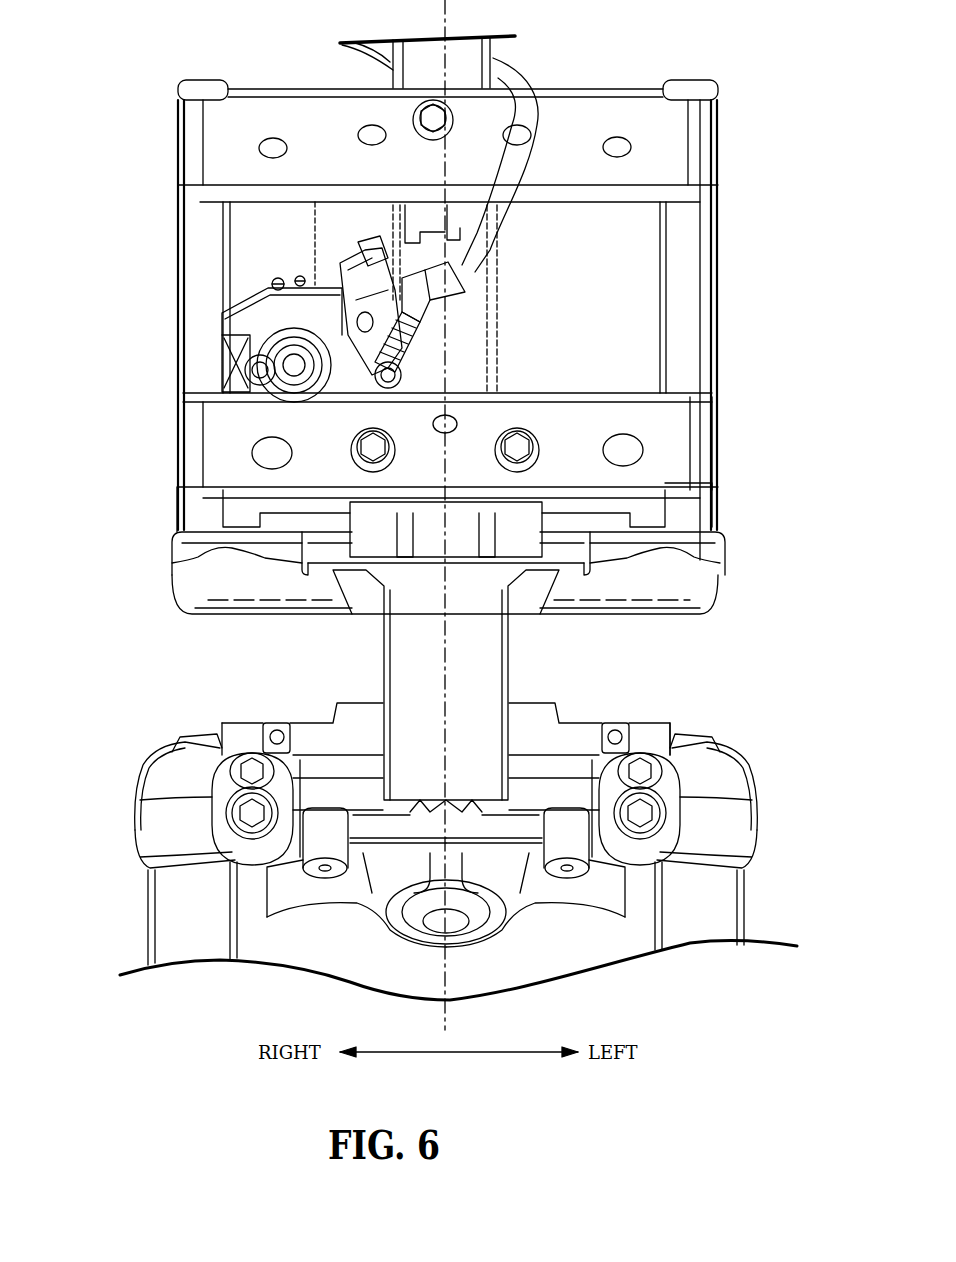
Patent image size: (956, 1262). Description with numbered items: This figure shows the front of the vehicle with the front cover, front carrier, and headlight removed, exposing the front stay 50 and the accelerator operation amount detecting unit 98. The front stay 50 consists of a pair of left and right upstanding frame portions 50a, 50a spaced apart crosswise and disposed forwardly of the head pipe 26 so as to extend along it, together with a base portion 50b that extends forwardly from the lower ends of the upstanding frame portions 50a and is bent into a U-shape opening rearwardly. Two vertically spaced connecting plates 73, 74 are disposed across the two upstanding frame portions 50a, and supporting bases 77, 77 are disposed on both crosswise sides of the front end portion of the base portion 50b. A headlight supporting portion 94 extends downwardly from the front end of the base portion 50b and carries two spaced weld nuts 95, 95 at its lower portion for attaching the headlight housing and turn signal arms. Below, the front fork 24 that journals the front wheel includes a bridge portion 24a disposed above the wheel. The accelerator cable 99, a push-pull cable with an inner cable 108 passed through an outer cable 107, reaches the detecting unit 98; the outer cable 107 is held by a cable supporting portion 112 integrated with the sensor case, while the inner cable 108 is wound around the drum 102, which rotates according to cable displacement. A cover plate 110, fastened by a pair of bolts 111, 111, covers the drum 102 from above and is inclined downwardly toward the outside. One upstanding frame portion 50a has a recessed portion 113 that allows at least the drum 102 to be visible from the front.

The front fork 24 is at (458, 806).
The bridge portion 24a is at (327, 790).
The head pipe 26 is at (473, 57).
The front stay 50 is at (452, 430).
The upstanding frame portion 50a is at (202, 279).
The base portion 50b is at (471, 597).
The connecting plate 73 is at (585, 113).
The connecting plate 74 is at (215, 441).
The supporting base 77 is at (185, 548).
The headlight supporting portion 94 is at (563, 740).
The weld nut 95 is at (273, 720).
The accelerator operation amount detecting unit 98 is at (315, 198).
The accelerator cable 99 is at (492, 250).
The drum 102 is at (305, 396).
The outer cable 107 is at (487, 312).
The inner cable 108 is at (363, 396).
The cover plate 110 is at (225, 320).
The bolt 111 is at (287, 277).
The cable supporting portion 112 is at (440, 347).
The recessed portion 113 is at (222, 357).